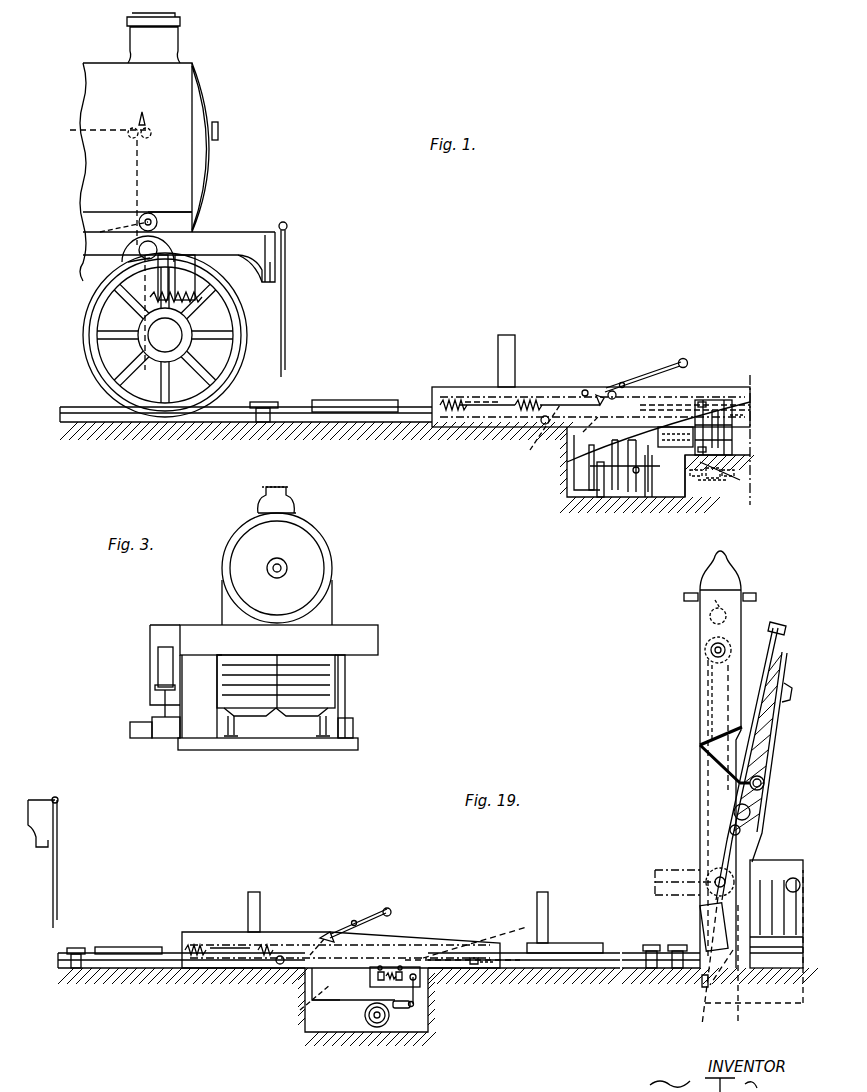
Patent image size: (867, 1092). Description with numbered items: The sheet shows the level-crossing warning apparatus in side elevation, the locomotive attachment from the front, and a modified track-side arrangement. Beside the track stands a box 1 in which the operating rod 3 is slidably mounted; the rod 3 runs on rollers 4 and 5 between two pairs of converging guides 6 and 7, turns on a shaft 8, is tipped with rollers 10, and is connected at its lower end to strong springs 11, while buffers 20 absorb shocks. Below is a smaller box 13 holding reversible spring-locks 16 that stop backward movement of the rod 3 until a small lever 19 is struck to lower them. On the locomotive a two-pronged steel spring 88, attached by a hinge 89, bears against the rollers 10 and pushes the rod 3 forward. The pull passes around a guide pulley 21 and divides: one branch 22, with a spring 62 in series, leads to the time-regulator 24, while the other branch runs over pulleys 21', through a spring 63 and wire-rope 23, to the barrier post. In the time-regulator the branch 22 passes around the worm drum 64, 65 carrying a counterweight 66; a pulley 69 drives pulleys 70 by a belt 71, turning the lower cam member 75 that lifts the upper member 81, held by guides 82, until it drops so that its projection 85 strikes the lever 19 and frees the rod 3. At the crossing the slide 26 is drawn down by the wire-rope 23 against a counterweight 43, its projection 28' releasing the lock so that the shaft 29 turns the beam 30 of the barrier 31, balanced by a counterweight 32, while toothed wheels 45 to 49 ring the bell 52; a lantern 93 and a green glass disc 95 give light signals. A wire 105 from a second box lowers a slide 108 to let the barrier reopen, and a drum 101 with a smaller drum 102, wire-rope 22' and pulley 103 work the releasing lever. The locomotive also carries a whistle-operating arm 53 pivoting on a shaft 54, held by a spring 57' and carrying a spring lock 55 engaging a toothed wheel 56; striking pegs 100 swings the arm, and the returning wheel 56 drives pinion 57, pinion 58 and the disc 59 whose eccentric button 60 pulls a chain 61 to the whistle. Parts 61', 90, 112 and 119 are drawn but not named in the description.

In FIG. 1, the box 1 is at (518, 386).
In FIG. 3, the box 1 is at (172, 738).
In FIG. 19, the box 1 is at (214, 935).
In FIG. 1, the operating rod 3 is at (655, 375).
In FIG. 19, the operating rod 3 is at (362, 918).
In FIG. 1, the rollers 4 is at (545, 424).
In FIG. 19, the rollers 4 is at (280, 964).
In FIG. 1, the rollers 5 is at (598, 392).
In FIG. 19, the rollers 5 is at (322, 932).
In FIG. 1, the converging guides 6 is at (583, 432).
In FIG. 19, the converging guides 6 is at (300, 1010).
In FIG. 19, the converging guides 7 is at (445, 950).
In FIG. 1, the shaft 8 is at (612, 391).
In FIG. 1, the rollers 10 is at (688, 361).
In FIG. 19, the rollers 10 is at (391, 910).
In FIG. 1, the strong springs 11 is at (472, 400).
In FIG. 19, the strong springs 11 is at (232, 958).
In FIG. 1, the smaller box 13 is at (658, 440).
In FIG. 19, the smaller box 13 is at (367, 1007).
In FIG. 1, the reversible spring-locks 16 is at (698, 400).
In FIG. 19, the reversible spring-locks 16 is at (398, 965).
In FIG. 19, the small lever 19 is at (420, 980).
In FIG. 1, the buffers 20 is at (583, 390).
In FIG. 19, the buffers 20 is at (488, 966).
In FIG. 1, the guide pulley 21 is at (264, 400).
In FIG. 19, the guide pulley 21 is at (84, 940).
In FIG. 1, the pulleys 21' is at (486, 441).
In FIG. 19, the pulleys 21' is at (417, 955).
In FIG. 19, the branch of wire-rope 22 is at (306, 1040).
In FIG. 19, the wire-rope 22' is at (450, 1014).
In FIG. 19, the operating wire-rope 23 is at (709, 974).
In FIG. 1, the time-regulator 24 is at (690, 497).
In FIG. 3, the time-regulator 24 is at (130, 728).
In FIG. 19, the slide 26 is at (774, 684).
In FIG. 19, the projection 28' is at (735, 978).
In FIG. 19, the shaft 29 is at (681, 882).
In FIG. 19, the beam 30 is at (778, 646).
In FIG. 19, the barrier 31 is at (786, 706).
In FIG. 19, the counterweight 32 is at (704, 958).
In FIG. 19, the counterweight 43 is at (704, 782).
In FIG. 19, the toothed wheel 45 is at (730, 642).
In FIG. 19, the toothed wheel 49 is at (754, 595).
In FIG. 19, the bell 52 is at (736, 570).
In FIG. 1, the arm 53 is at (118, 370).
In FIG. 3, the arm 53 is at (340, 680).
In FIG. 1, the shaft 54 is at (242, 284).
In FIG. 1, the spring lock 55 is at (145, 278).
In FIG. 1, the toothed wheel 56 is at (160, 250).
In FIG. 1, the pinion 57 is at (111, 267).
In FIG. 1, the spring 57' is at (211, 329).
In FIG. 1, the pinion 58 is at (158, 222).
In FIG. 1, the disc 59 is at (160, 212).
In FIG. 1, the button 60 is at (100, 232).
In FIG. 1, the chain 61 is at (106, 186).
In FIG. 1, the valve handle 61' is at (139, 108).
In FIG. 1, the spring 62 is at (340, 400).
In FIG. 19, the spring 62 is at (130, 947).
In FIG. 19, the spring 63 is at (572, 943).
In FIG. 1, the pulley drum or worm 64 is at (616, 490).
In FIG. 1, the pulley drum or worm 65 is at (597, 475).
In FIG. 1, the counterweight 66 is at (600, 490).
In FIG. 1, the pulley 69 is at (632, 492).
In FIG. 1, the pulleys 70 is at (645, 492).
In FIG. 1, the driving belt 71 is at (670, 497).
In FIG. 1, the lower cylindrical part member 75 is at (728, 476).
In FIG. 1, the upper cylindrical part member 81 is at (740, 478).
In FIG. 1, the guides 82 is at (732, 424).
In FIG. 1, the projection 85 is at (720, 400).
In FIG. 1, the two-pronged steel spring 88 is at (287, 340).
In FIG. 3, the two-pronged steel spring 88 is at (158, 660).
In FIG. 19, the two-pronged steel spring 88 is at (58, 876).
In FIG. 1, the hinge 89 is at (287, 224).
In FIG. 19, the bolt 90 is at (684, 597).
In FIG. 19, the lantern 93 is at (764, 783).
In FIG. 19, the green glass disc 95 is at (750, 812).
In FIG. 1, the pegs 100 is at (508, 334).
In FIG. 3, the pegs 100 is at (353, 728).
In FIG. 19, the pegs 100 is at (255, 892).
In FIG. 19, the drum 101 is at (368, 1020).
In FIG. 19, the smaller drum 102 is at (382, 1020).
In FIG. 19, the pulley 103 is at (405, 1010).
In FIG. 19, the wire 105 is at (700, 824).
In FIG. 19, the slide 108 is at (702, 678).
In FIG. 19, the bracket 112 is at (700, 747).
In FIG. 19, the pulley 119 is at (708, 622).